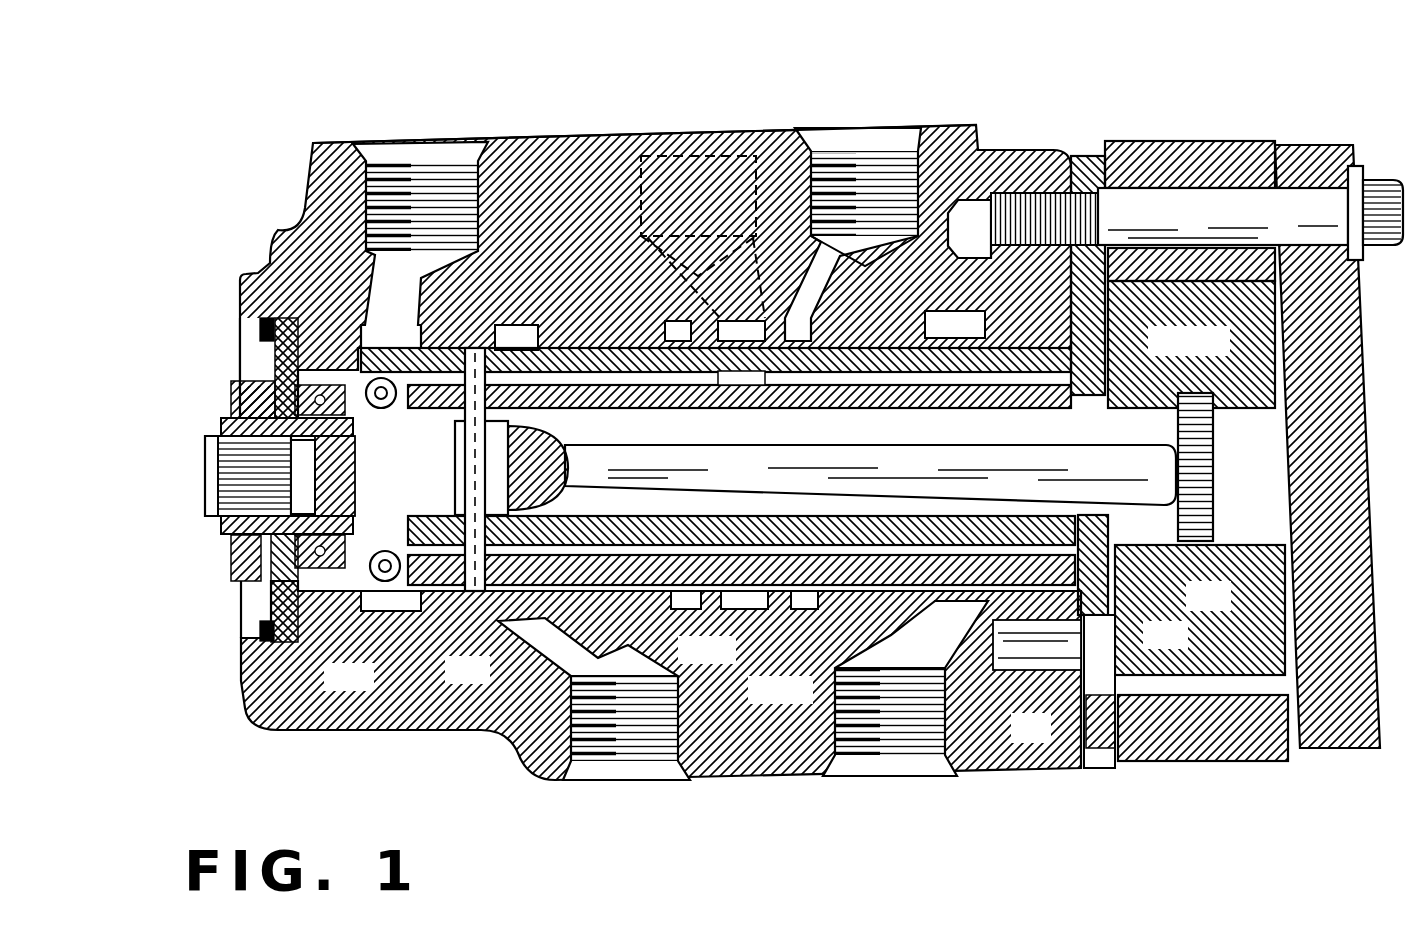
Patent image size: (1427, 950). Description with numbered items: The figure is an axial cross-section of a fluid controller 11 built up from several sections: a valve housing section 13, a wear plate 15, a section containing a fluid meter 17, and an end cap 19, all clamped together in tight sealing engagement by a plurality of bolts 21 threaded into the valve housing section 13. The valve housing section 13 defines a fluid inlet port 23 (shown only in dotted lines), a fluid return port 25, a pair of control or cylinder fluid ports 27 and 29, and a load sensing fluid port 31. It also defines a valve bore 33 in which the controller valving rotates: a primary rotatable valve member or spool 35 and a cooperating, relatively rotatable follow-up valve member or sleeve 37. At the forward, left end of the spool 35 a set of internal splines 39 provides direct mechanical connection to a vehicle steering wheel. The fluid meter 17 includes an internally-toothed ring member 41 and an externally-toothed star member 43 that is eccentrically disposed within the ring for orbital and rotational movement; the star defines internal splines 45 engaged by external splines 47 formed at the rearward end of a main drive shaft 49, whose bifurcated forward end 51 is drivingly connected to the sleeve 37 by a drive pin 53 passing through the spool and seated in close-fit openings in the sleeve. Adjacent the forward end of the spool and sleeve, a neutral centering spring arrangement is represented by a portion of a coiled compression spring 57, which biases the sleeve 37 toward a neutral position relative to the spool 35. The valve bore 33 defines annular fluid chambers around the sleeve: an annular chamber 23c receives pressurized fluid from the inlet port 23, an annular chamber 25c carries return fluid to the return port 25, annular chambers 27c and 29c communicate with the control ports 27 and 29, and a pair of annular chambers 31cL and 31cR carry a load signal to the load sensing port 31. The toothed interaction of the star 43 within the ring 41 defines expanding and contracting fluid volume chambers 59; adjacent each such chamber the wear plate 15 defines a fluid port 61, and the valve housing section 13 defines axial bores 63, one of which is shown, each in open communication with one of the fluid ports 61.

The fluid controller 11 is at (559, 112).
The valve housing section 13 is at (287, 233).
The wear plate 15 is at (1080, 152).
The fluid meter 17 is at (1173, 116).
The end cap 19 is at (1350, 376).
The bolts 21 is at (1378, 183).
The fluid inlet port 23 is at (713, 160).
The fluid return port 25 is at (446, 178).
The control fluid port 27 is at (650, 732).
The control fluid port 29 is at (912, 728).
The load sensing fluid port 31 is at (884, 158).
The valve bore 33 is at (436, 590).
The primary rotatable valve member 35 is at (733, 397).
The follow-up valve member 37 is at (838, 382).
The internal splines 39 is at (236, 466).
The internally-toothed ring member 41 is at (1187, 738).
The externally-toothed star member 43 is at (1191, 344).
The internal splines 45 is at (1240, 530).
The external splines 47 is at (1198, 438).
The main drive shaft 49 is at (1022, 472).
The bifurcated forward end 51 is at (498, 434).
The drive pin 53 is at (538, 485).
The coiled compression spring 57 is at (375, 403).
The fluid volume chambers 59 is at (1192, 678).
The fluid port 61 is at (1085, 670).
The axial bores 63 is at (1017, 640).
The annular chamber 25c is at (385, 598).
The annular chamber 27c is at (510, 322).
The annular chamber 29c is at (950, 312).
The annular chamber 31cL is at (658, 322).
The annular chamber 31cR is at (795, 603).
The annular chamber 23c is at (712, 600).